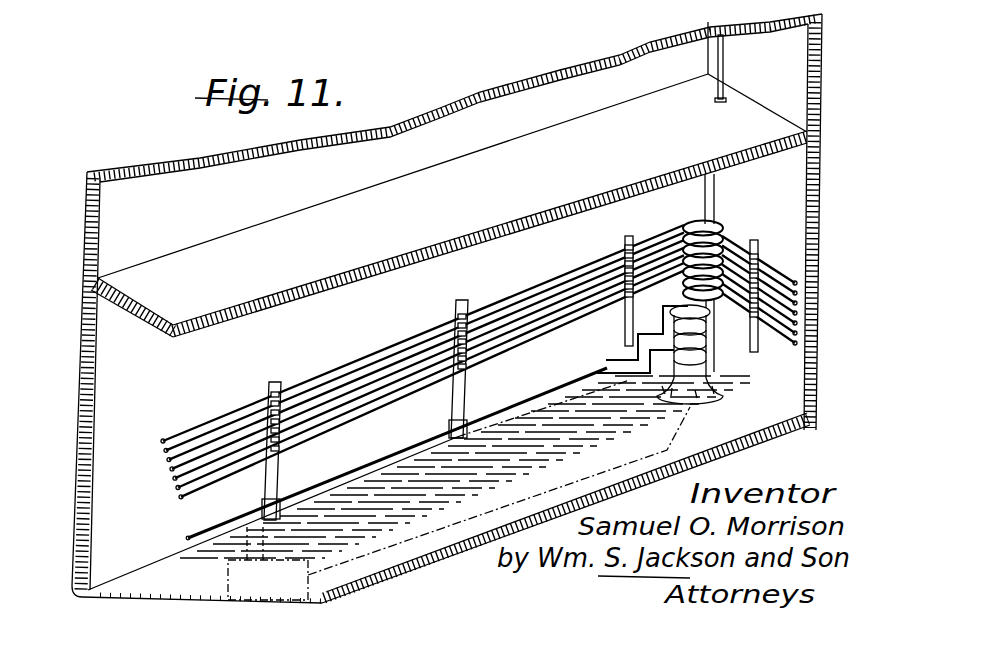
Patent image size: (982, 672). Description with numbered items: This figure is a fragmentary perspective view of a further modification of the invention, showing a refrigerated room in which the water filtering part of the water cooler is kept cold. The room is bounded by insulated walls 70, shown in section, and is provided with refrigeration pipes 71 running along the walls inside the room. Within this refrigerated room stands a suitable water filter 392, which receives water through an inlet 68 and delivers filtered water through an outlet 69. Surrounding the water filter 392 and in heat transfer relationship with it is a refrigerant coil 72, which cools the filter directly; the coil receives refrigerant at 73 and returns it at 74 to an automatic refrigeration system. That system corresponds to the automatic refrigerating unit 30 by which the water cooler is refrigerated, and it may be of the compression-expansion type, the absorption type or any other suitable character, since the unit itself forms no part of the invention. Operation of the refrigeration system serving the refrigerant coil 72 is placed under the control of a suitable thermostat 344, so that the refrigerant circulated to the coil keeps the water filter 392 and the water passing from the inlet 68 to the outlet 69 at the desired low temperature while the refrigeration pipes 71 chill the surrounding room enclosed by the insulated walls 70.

The automatic refrigerating unit 30 is at (459, 503).
The thermostat 344 is at (690, 386).
The water filter 392 is at (674, 390).
The inlet 68 is at (590, 378).
The outlet 69 is at (715, 344).
The insulated walls 70 is at (426, 310).
The refrigeration pipes 71 is at (422, 334).
The refrigerant coil 72 is at (652, 382).
The refrigerant receiving point 73 is at (614, 366).
The refrigerant return point 74 is at (608, 396).